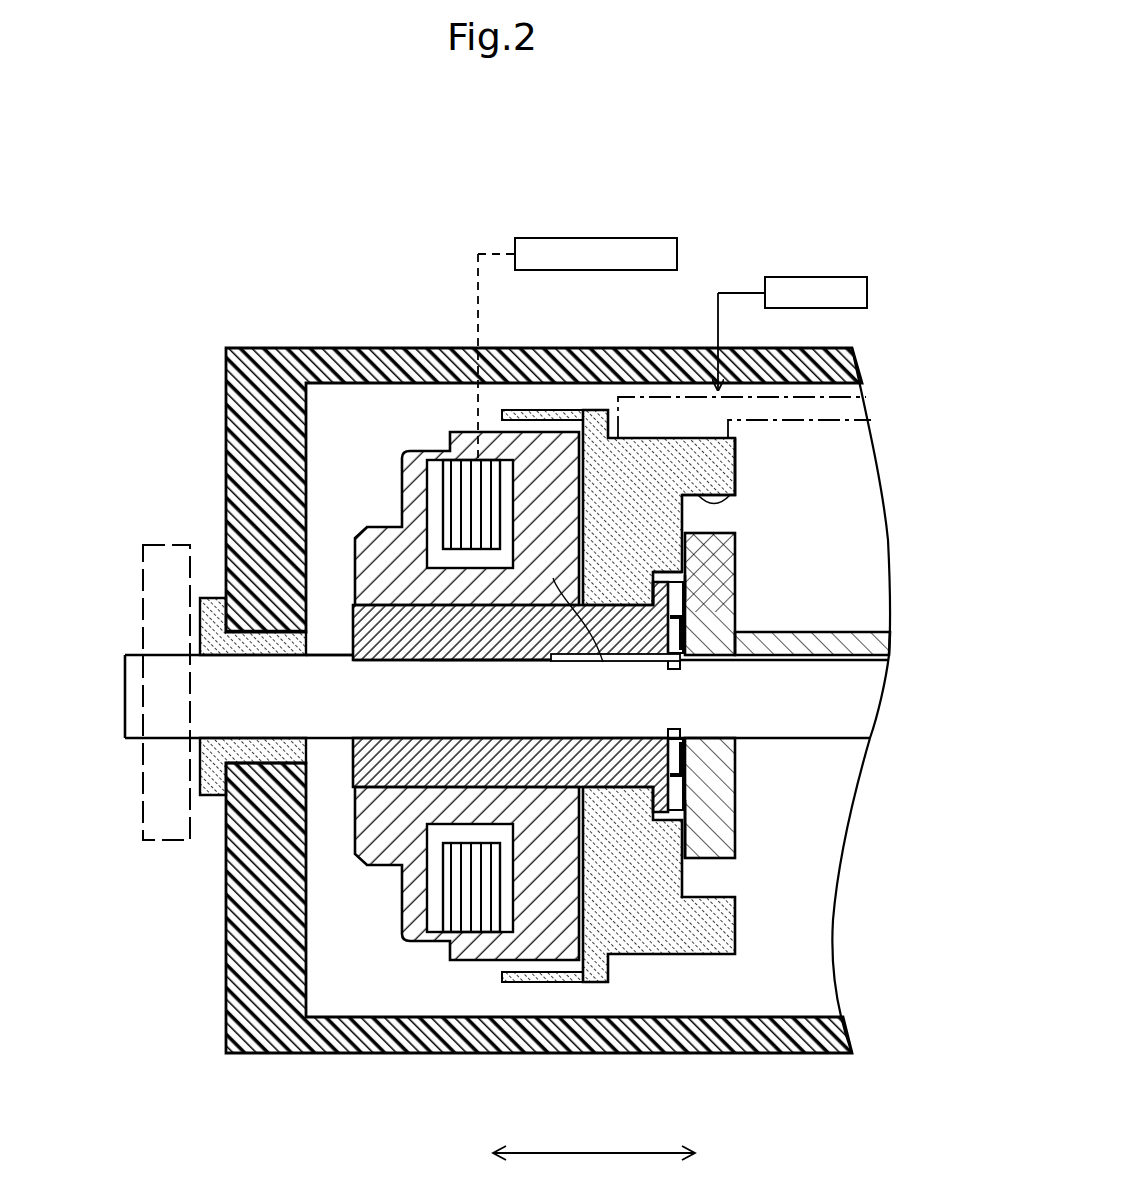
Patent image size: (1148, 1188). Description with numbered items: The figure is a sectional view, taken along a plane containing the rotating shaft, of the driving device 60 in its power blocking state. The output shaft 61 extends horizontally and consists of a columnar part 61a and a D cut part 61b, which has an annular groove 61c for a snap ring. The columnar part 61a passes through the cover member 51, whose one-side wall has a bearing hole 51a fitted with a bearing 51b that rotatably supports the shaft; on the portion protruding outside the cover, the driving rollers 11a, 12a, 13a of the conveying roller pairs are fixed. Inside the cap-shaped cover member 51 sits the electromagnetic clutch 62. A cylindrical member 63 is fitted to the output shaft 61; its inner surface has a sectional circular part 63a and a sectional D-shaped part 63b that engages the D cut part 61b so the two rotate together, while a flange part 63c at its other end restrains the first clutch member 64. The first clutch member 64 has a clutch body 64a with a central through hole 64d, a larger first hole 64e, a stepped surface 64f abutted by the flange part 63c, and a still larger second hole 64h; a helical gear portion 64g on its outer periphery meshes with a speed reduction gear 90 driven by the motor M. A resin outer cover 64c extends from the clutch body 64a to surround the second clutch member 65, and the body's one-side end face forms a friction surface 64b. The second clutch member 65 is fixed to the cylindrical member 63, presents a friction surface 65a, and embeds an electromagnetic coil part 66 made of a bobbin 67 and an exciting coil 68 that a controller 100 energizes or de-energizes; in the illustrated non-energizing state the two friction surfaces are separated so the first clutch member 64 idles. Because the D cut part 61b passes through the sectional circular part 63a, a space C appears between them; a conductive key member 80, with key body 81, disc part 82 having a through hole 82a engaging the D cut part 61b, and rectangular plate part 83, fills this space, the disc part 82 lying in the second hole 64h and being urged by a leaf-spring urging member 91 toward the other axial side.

The driving device 60 is at (200, 240).
The driving roller 11a is at (175, 574).
The driving roller 12a is at (175, 574).
The driving roller 13a is at (155, 543).
The cover member 51 is at (396, 348).
The bearing hole 51a is at (200, 600).
The bearing 51b is at (210, 797).
The output shaft 61 is at (142, 727).
The columnar part 61a is at (333, 653).
The D cut part 61b is at (405, 660).
The annular groove 61c is at (690, 665).
The cylindrical member 63 is at (372, 745).
The sectional circular part 63a is at (560, 662).
The sectional D-shaped part 63b is at (468, 662).
The flange part 63c is at (713, 828).
The second clutch member 65 is at (443, 445).
The friction surface 65a is at (595, 878).
The electromagnetic coil part 66 is at (409, 668).
The bobbin 67 is at (430, 480).
The exciting coil 68 is at (478, 478).
The first clutch member 64 is at (739, 491).
The clutch body 64a is at (740, 466).
The friction surface 64b is at (568, 943).
The outer cover 64c is at (518, 410).
The through hole 64d is at (640, 606).
The first hole 64e is at (683, 600).
The stepped surface 64f is at (690, 588).
The gear portion 64g is at (728, 421).
The second hole 64h is at (693, 495).
The electromagnetic clutch 62 is at (741, 876).
The key member 80 is at (787, 695).
The key body 81 is at (630, 662).
The disc part 82 is at (722, 613).
The through hole 82a is at (713, 728).
The rectangular plate part 83 is at (850, 637).
The speed reduction gear 90 is at (657, 395).
The urging member 91 is at (684, 623).
The controller 100 is at (633, 238).
The motor M is at (833, 277).
The space C is at (558, 580).